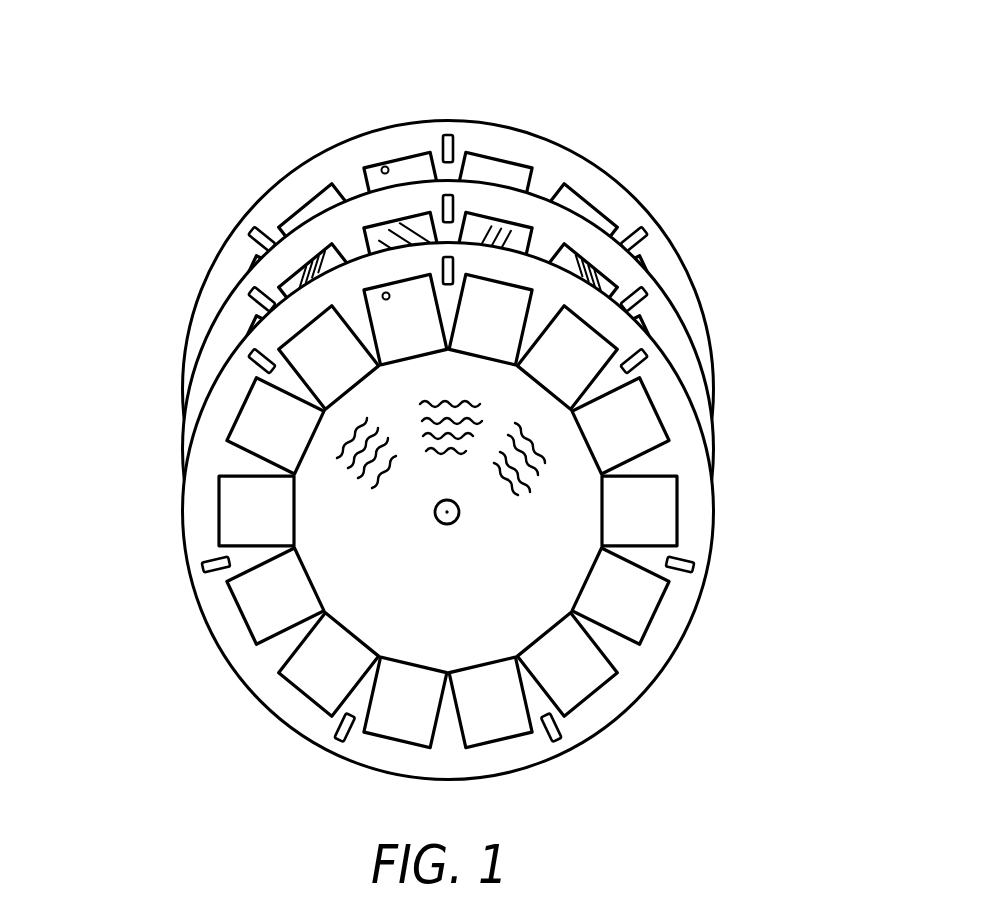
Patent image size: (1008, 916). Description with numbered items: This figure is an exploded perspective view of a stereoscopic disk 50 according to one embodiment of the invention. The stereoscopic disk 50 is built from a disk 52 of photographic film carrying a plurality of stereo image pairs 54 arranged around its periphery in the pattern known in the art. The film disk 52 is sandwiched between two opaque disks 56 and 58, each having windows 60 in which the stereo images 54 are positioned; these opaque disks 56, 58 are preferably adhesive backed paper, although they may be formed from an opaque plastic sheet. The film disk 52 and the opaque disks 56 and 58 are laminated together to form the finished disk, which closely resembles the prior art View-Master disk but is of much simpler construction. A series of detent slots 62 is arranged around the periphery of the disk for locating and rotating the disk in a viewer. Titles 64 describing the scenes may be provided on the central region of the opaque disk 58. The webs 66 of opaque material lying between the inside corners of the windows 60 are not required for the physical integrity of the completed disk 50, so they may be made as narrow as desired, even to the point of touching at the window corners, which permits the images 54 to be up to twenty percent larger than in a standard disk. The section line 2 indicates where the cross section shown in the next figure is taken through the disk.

The stereoscopic disk 50 is at (460, 417).
The disk of photographic film 52 is at (392, 425).
The stereo image pairs 54 is at (580, 260).
The opaque disk 56 is at (189, 318).
The opaque disk 58 is at (456, 433).
The windows 60 is at (383, 169).
The detent slots 62 is at (650, 352).
The titles 64 is at (540, 448).
The webs 66 is at (451, 302).
The section line 2— 2 is at (163, 513).